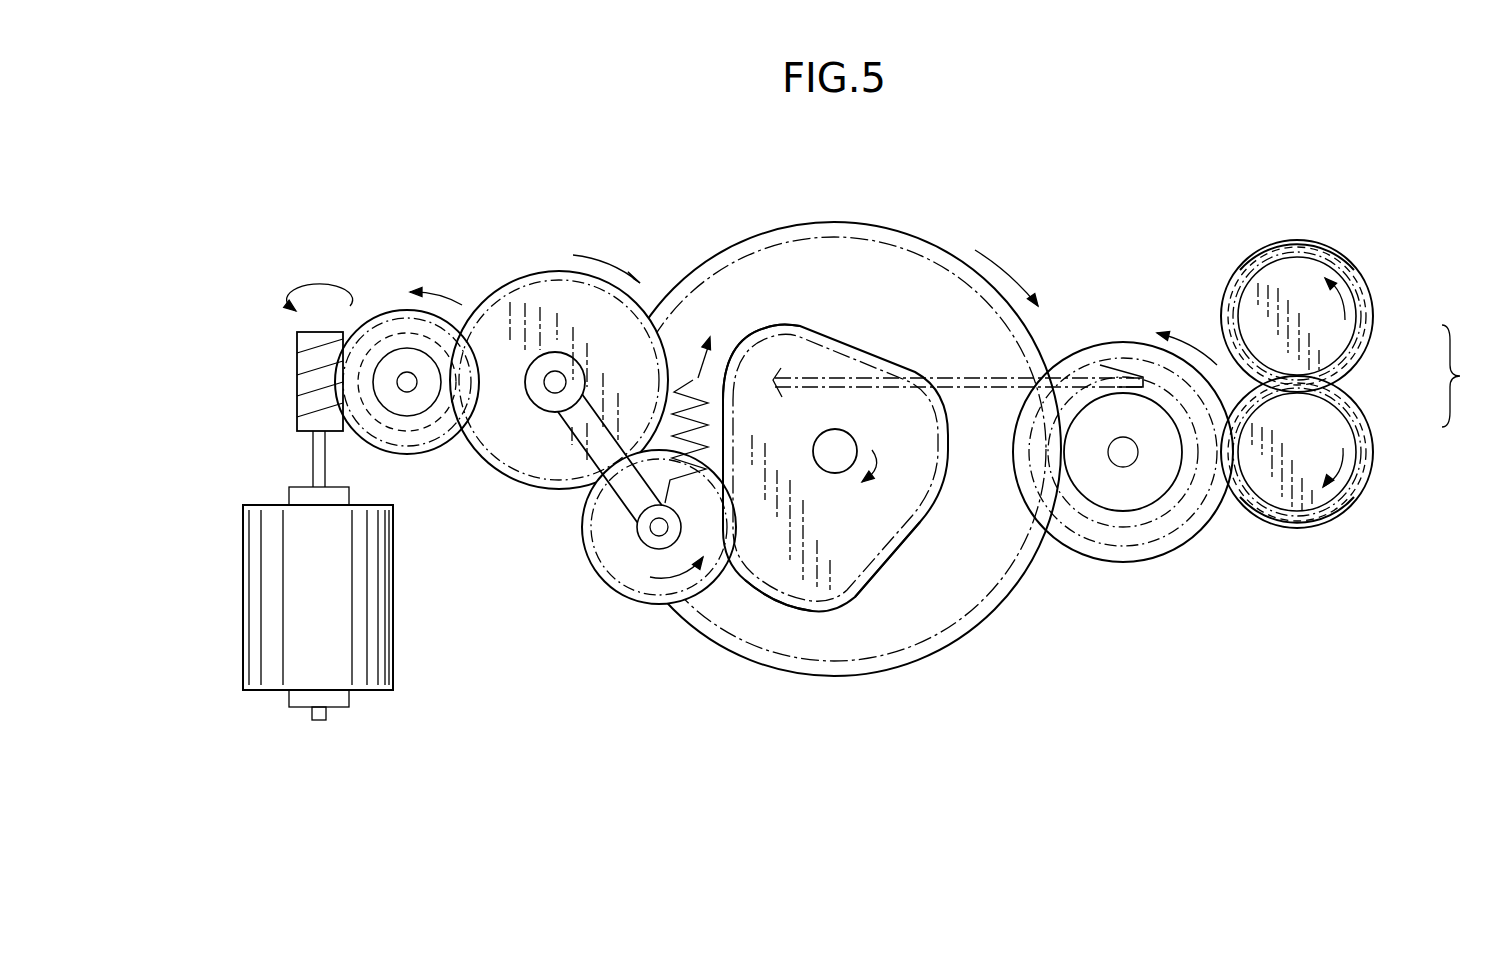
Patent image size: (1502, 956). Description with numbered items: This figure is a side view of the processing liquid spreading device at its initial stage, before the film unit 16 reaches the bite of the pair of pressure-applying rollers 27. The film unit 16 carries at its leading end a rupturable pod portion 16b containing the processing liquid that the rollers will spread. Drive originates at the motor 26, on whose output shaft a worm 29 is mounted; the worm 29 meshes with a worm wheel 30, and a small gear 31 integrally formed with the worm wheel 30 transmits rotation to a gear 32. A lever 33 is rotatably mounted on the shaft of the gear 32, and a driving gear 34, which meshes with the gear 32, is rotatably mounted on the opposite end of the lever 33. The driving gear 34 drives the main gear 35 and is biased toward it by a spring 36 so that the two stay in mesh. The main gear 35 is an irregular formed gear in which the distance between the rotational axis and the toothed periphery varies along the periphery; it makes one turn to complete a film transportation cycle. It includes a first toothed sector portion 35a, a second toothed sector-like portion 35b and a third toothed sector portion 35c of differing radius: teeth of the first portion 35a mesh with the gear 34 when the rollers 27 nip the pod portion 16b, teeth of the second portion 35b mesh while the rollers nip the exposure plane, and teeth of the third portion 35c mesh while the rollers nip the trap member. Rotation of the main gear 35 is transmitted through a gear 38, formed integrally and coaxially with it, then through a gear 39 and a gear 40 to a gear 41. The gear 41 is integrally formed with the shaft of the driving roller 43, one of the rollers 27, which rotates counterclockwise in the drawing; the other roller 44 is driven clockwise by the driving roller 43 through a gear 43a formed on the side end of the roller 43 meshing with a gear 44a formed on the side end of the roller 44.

The film unit 16 is at (948, 358).
The pod portion 16b is at (1100, 364).
The motor 26 is at (262, 605).
The pair of pressure-applying rollers 27 is at (1472, 376).
The worm 29 is at (297, 375).
The worm wheel 30 is at (397, 312).
The small gear 31 is at (414, 428).
The gear 32 is at (527, 268).
The lever 33 is at (587, 427).
The driving gear 34 is at (613, 588).
The main gear 35 is at (872, 590).
The first toothed sector portion 35a is at (770, 600).
The second toothed sector-like portion 35b is at (953, 455).
The third toothed sector portion 35c is at (748, 337).
The spring 36 is at (690, 378).
The gear 38 is at (768, 232).
The gear 39 is at (1180, 520).
The gear 40 is at (1110, 565).
The gear 41 is at (1310, 530).
The driving roller 43 is at (1365, 448).
The gear 43a is at (1310, 530).
The roller 44 is at (1367, 323).
The gear 44a is at (1288, 240).